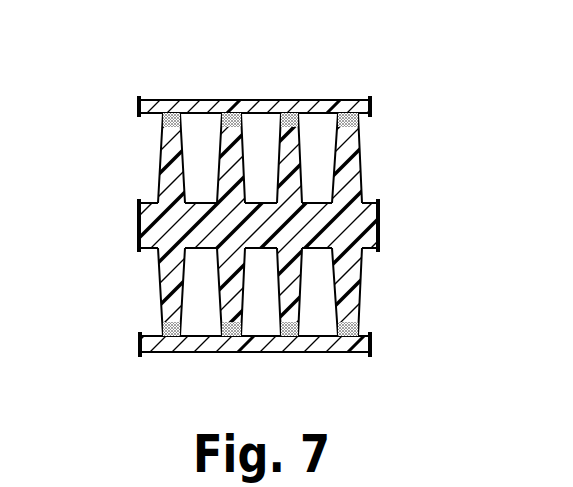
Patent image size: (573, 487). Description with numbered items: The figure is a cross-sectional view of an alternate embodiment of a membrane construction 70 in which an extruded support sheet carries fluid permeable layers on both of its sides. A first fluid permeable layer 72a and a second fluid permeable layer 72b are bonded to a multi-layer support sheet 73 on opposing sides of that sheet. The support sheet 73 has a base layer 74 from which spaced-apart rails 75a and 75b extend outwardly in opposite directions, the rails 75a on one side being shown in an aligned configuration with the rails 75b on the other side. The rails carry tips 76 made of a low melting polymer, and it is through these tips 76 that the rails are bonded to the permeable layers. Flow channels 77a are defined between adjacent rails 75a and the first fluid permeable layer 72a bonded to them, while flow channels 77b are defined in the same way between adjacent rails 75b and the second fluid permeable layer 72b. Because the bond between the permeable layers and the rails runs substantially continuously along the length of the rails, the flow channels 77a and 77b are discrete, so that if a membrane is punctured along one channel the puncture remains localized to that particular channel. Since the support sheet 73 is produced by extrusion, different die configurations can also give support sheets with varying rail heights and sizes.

The membrane construction 70 is at (358, 75).
The first fluid permeable layer 72a is at (373, 100).
The second fluid permeable layer 72b is at (137, 344).
The multi-layer support sheet 73 is at (137, 223).
The base layer 74 is at (360, 238).
The rails 75a is at (160, 160).
The rails 75b is at (162, 293).
The tips 76 is at (352, 120).
The flow channels 77a is at (262, 122).
The flow channels 77b is at (323, 322).